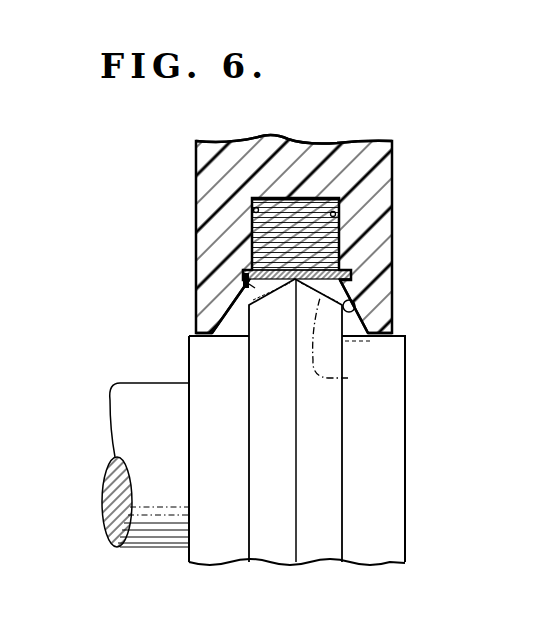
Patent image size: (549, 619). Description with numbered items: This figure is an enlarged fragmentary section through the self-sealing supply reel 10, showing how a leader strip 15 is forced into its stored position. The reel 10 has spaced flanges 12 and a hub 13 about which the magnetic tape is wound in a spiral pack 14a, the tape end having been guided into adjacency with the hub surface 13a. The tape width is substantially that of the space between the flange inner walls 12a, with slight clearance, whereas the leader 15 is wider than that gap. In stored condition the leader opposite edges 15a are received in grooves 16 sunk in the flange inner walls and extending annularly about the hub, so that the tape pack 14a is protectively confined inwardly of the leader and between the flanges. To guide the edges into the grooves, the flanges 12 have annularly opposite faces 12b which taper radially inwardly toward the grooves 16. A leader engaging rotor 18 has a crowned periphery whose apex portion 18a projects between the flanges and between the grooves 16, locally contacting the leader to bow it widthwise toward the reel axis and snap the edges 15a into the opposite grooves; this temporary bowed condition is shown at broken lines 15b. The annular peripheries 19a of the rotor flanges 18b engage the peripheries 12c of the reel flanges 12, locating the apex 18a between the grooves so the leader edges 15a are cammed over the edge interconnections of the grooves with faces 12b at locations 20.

The supply reel 10 is at (165, 148).
The flanges 12 is at (372, 244).
The flange inner walls 12a is at (252, 210).
The annularly opposite faces 12b is at (215, 327).
The peripheries of the reel flanges 12c is at (380, 334).
The hub 13 is at (355, 142).
The hub surface 13a is at (280, 196).
The spiral pack 14a is at (341, 196).
The leader strip 15 is at (278, 263).
The leader opposite edges 15a is at (350, 275).
The broken lines showing bowed leader 15b is at (351, 347).
The grooves 16 is at (242, 274).
The leader engaging rotor 18 is at (395, 437).
The apex portion 18a is at (295, 305).
The rotor flanges 18b is at (198, 423).
The annular peripheries of rotor flanges 19a is at (360, 315).
The camming locations 20 is at (242, 284).